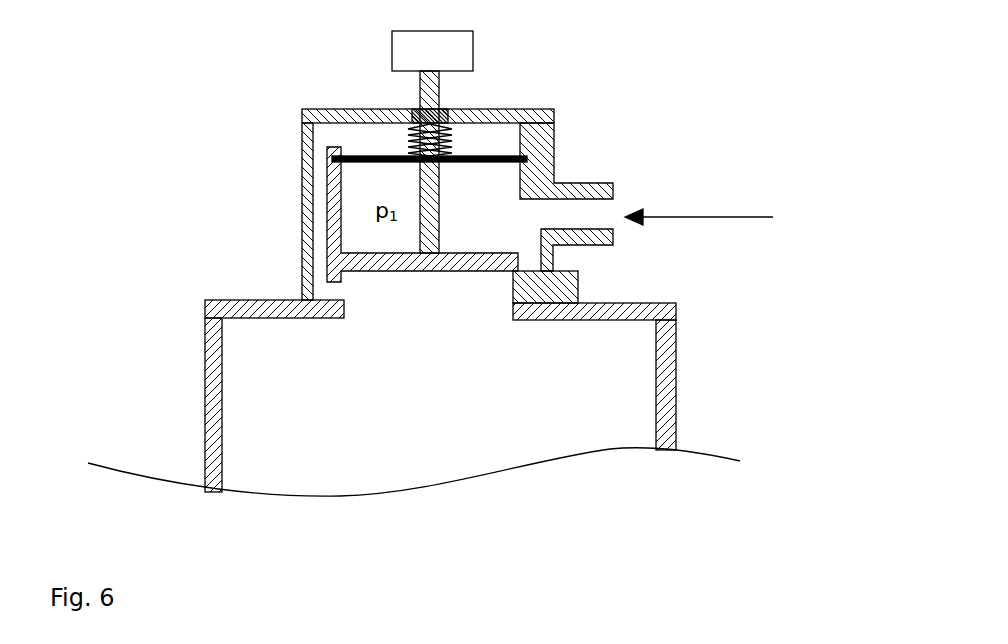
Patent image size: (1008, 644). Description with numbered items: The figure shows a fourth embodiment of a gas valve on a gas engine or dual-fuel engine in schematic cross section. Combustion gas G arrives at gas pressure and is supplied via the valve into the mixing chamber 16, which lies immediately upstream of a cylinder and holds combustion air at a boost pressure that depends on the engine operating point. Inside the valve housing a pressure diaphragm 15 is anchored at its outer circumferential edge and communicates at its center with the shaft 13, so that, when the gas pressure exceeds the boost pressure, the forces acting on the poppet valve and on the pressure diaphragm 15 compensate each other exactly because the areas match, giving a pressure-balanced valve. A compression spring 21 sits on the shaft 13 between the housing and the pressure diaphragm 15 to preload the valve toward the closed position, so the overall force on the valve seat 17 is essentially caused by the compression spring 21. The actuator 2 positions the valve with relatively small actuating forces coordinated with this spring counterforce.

The actuator 2 is at (433, 53).
The shaft 13 is at (419, 195).
The pressure diaphragm 15 is at (380, 153).
The compression spring 21 is at (440, 137).
The valve seat 17 is at (475, 253).
The mixing chamber 16 is at (222, 370).
The combustion gas G is at (700, 217).